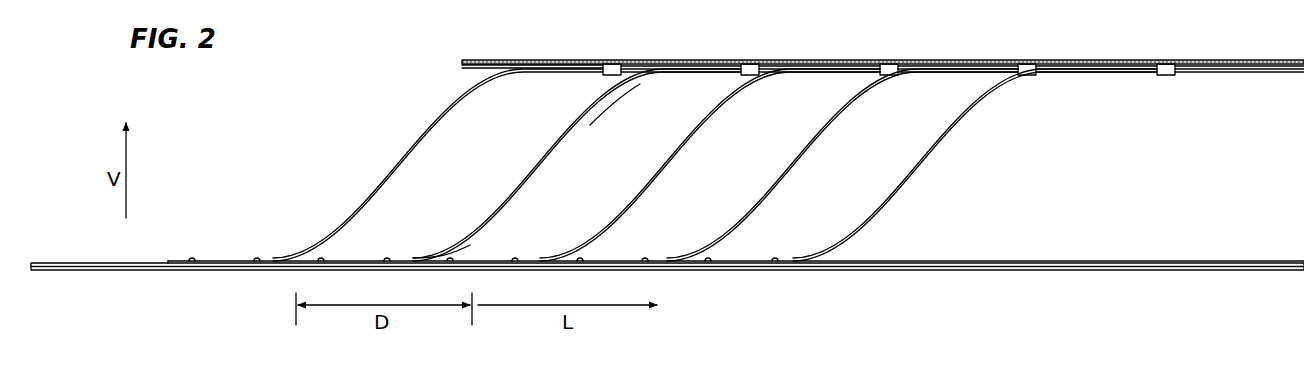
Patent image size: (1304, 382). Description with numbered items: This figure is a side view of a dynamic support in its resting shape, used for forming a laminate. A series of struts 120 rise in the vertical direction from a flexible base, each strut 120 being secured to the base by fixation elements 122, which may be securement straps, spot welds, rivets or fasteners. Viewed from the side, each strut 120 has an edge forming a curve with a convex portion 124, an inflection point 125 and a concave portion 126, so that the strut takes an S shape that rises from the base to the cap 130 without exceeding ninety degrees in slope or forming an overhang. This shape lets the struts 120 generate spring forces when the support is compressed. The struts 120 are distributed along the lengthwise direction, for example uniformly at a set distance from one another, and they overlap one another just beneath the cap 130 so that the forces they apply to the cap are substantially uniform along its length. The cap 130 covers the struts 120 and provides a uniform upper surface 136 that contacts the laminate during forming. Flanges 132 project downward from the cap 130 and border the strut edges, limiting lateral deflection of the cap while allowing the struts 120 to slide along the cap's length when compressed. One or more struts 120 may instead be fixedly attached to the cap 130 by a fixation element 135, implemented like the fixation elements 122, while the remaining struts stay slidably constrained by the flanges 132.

The strut 120 is at (383, 179).
The fixation elements 122 is at (192, 259).
The convex portion 124 is at (472, 247).
The inflection point 125 is at (517, 177).
The concave portion 126 is at (617, 105).
The cap 130 is at (580, 59).
The flanges 132 is at (603, 73).
The fixation element 135 is at (676, 72).
The upper surface 136 is at (883, 57).